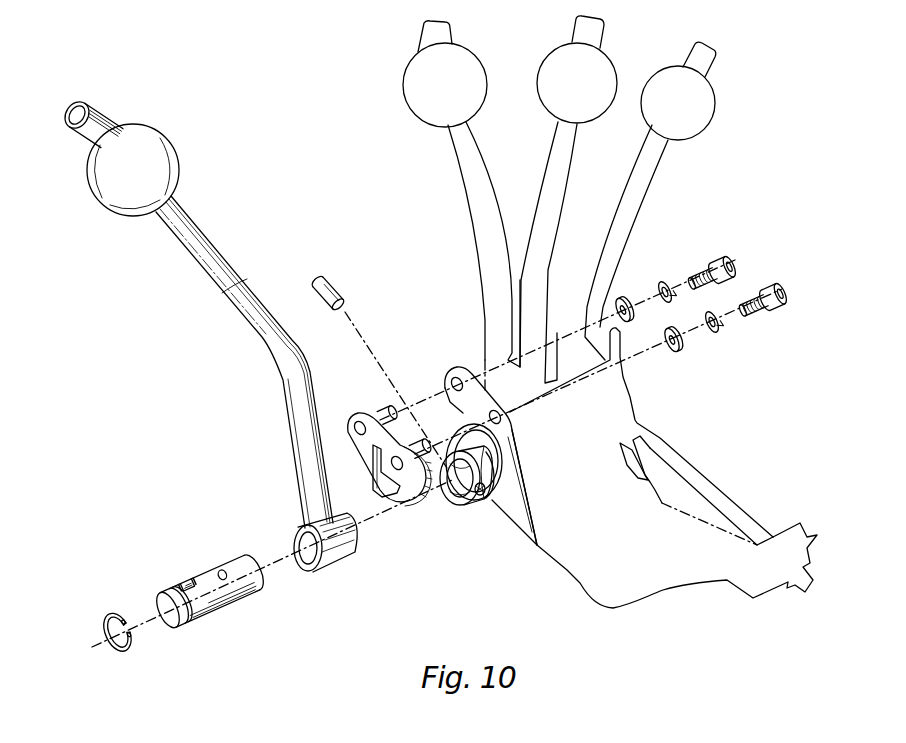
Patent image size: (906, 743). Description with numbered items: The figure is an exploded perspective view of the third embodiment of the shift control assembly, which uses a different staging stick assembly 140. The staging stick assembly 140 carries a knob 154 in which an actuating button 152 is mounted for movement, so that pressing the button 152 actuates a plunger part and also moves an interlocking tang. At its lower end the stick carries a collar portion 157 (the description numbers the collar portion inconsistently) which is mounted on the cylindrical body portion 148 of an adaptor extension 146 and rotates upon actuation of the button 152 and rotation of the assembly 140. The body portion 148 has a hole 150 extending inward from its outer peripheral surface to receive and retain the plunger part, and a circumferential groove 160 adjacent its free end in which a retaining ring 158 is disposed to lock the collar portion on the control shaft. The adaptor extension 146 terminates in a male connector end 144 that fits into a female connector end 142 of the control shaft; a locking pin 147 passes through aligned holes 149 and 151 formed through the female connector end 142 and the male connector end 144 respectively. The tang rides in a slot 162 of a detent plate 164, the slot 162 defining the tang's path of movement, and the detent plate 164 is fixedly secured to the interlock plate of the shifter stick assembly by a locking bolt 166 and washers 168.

The actuating button 152 is at (98, 105).
The knob 154 is at (175, 150).
The staging stick assembly 140 is at (220, 240).
The lever collar 157 is at (343, 562).
The locking pin 147 is at (340, 282).
The detent plate 164 is at (362, 420).
The slot 162 is at (398, 456).
The female connector end 142 is at (463, 508).
The hole 149 is at (481, 503).
The locking bolt 166 is at (770, 286).
The washers 168 is at (683, 322).
The male connector end 144 is at (255, 582).
The cylindrical body portion 148 is at (198, 628).
The hole 150 is at (196, 582).
The circumferential groove 160 is at (190, 583).
The hole 151 is at (232, 598).
The adaptor extension 146 is at (218, 613).
The retaining ring 158 is at (130, 622).